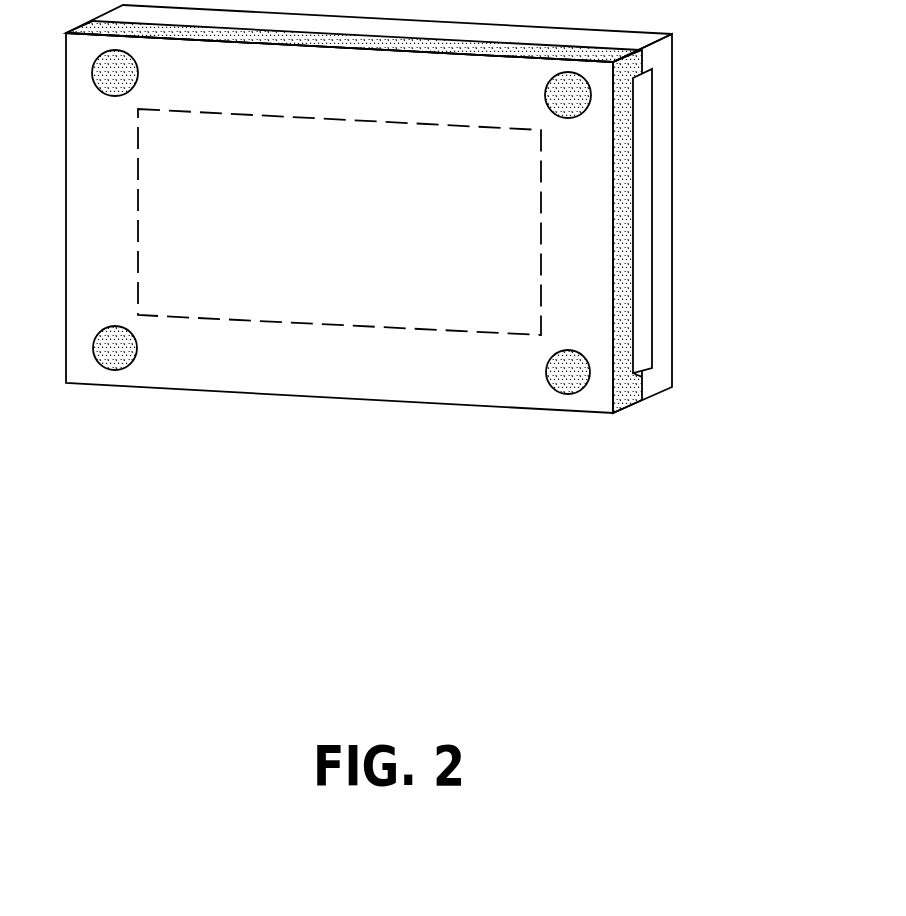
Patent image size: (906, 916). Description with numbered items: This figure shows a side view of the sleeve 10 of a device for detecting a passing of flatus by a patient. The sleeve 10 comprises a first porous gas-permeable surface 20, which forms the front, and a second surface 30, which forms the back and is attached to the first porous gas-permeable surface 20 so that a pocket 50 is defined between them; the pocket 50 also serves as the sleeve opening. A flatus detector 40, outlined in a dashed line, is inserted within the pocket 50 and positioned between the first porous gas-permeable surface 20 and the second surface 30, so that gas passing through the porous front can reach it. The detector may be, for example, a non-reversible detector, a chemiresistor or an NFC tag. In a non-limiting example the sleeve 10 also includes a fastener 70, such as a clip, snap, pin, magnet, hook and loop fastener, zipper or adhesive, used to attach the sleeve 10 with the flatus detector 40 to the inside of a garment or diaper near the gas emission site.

The sleeve 10 is at (585, 458).
The first porous gas-permeable surface 20 is at (662, 99).
The second surface 30 is at (333, 377).
The flatus detector 40 is at (501, 240).
The pocket 50 is at (643, 320).
The fastener 70 is at (115, 348).